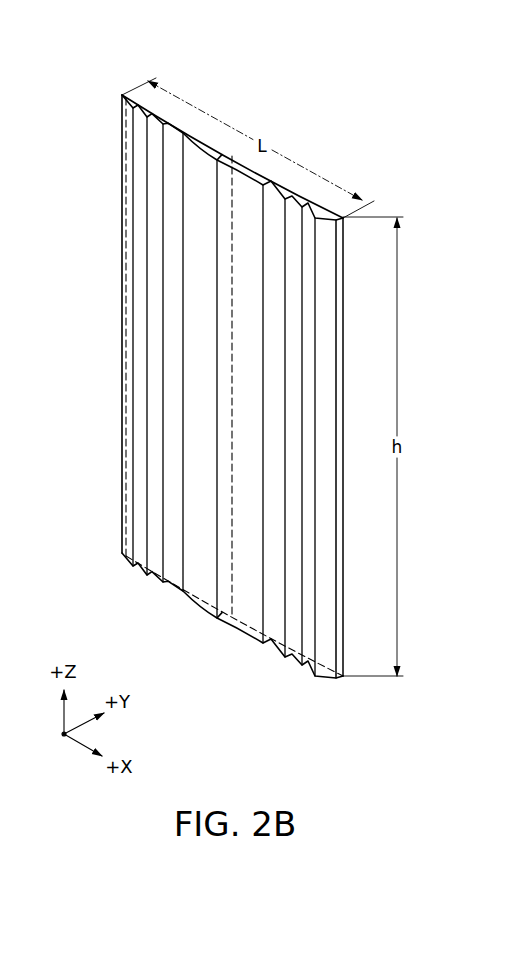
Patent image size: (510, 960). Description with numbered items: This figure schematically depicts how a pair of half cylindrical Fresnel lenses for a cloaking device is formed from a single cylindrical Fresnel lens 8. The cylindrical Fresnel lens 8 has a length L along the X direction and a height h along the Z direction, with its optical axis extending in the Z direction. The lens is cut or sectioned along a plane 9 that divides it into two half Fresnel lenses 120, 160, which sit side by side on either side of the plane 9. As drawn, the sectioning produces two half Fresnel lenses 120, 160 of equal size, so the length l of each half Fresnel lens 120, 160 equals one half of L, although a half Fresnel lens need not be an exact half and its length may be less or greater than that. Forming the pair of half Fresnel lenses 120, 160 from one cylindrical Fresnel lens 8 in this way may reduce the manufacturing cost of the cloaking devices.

The cylindrical Fresnel lens 8 is at (76, 96).
The half Fresnel lens 120 is at (204, 99).
The half Fresnel lens 160 is at (318, 157).
The plane 9 is at (229, 588).